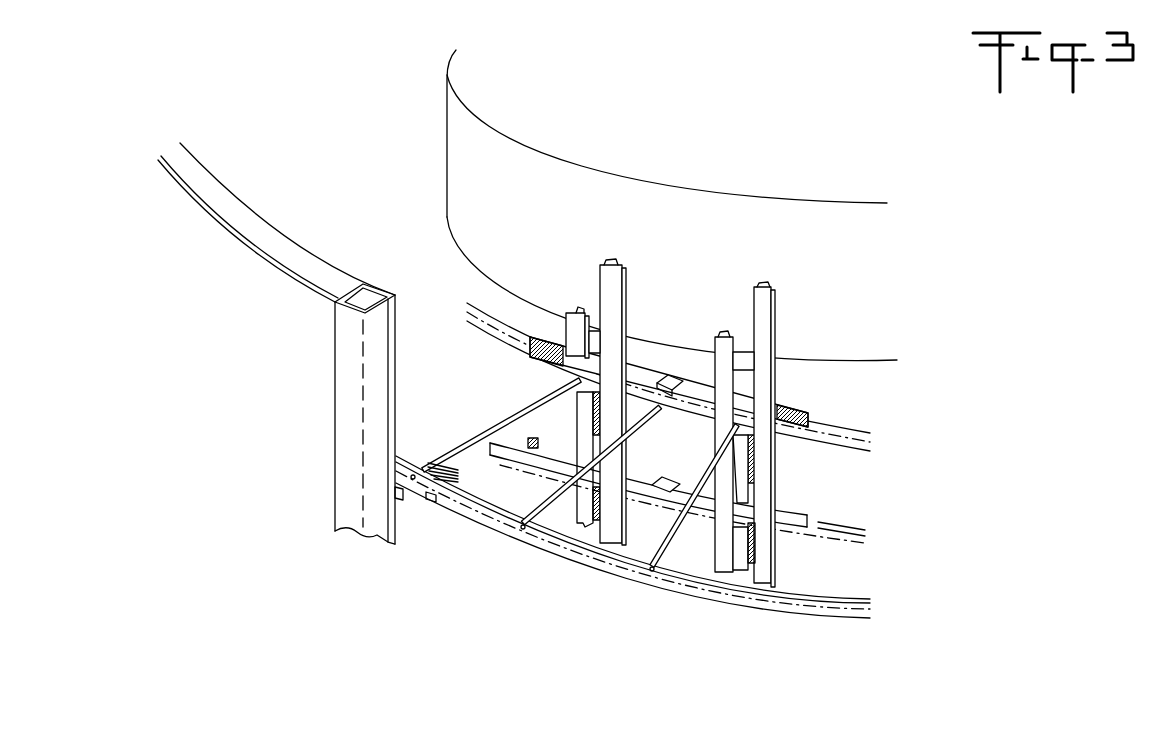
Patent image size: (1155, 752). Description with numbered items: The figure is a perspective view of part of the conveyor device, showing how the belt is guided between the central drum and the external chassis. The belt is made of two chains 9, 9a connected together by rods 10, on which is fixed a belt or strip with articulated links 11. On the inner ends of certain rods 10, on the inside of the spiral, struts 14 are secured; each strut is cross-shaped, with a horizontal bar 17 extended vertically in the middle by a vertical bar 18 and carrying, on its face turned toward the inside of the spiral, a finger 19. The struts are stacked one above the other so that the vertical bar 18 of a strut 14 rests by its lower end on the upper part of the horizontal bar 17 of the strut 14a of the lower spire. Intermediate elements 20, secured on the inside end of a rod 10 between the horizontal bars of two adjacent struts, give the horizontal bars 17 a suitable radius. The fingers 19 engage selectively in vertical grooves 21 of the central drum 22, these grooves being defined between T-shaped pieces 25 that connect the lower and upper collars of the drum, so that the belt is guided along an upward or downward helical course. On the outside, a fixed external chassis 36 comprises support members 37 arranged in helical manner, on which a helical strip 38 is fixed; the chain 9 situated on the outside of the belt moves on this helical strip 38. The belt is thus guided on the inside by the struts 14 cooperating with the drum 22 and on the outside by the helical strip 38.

The chain 9 is at (783, 598).
The chain 9a is at (846, 437).
The rods 10 is at (477, 440).
The belt with articulated links 11 is at (447, 460).
The strut 14 is at (757, 454).
The strut of the lower spire 14a is at (755, 548).
The horizontal bar 17 is at (810, 414).
The vertical bar 18 is at (743, 490).
The finger 19 is at (780, 394).
The intermediate elements 20 is at (667, 372).
The vertical grooves 21 is at (597, 345).
The central drum 22 is at (792, 220).
The T-shaped piece 25 is at (570, 337).
The fixed external chassis 36 is at (342, 452).
The support members 37 is at (403, 499).
The helical strip 38 is at (436, 505).